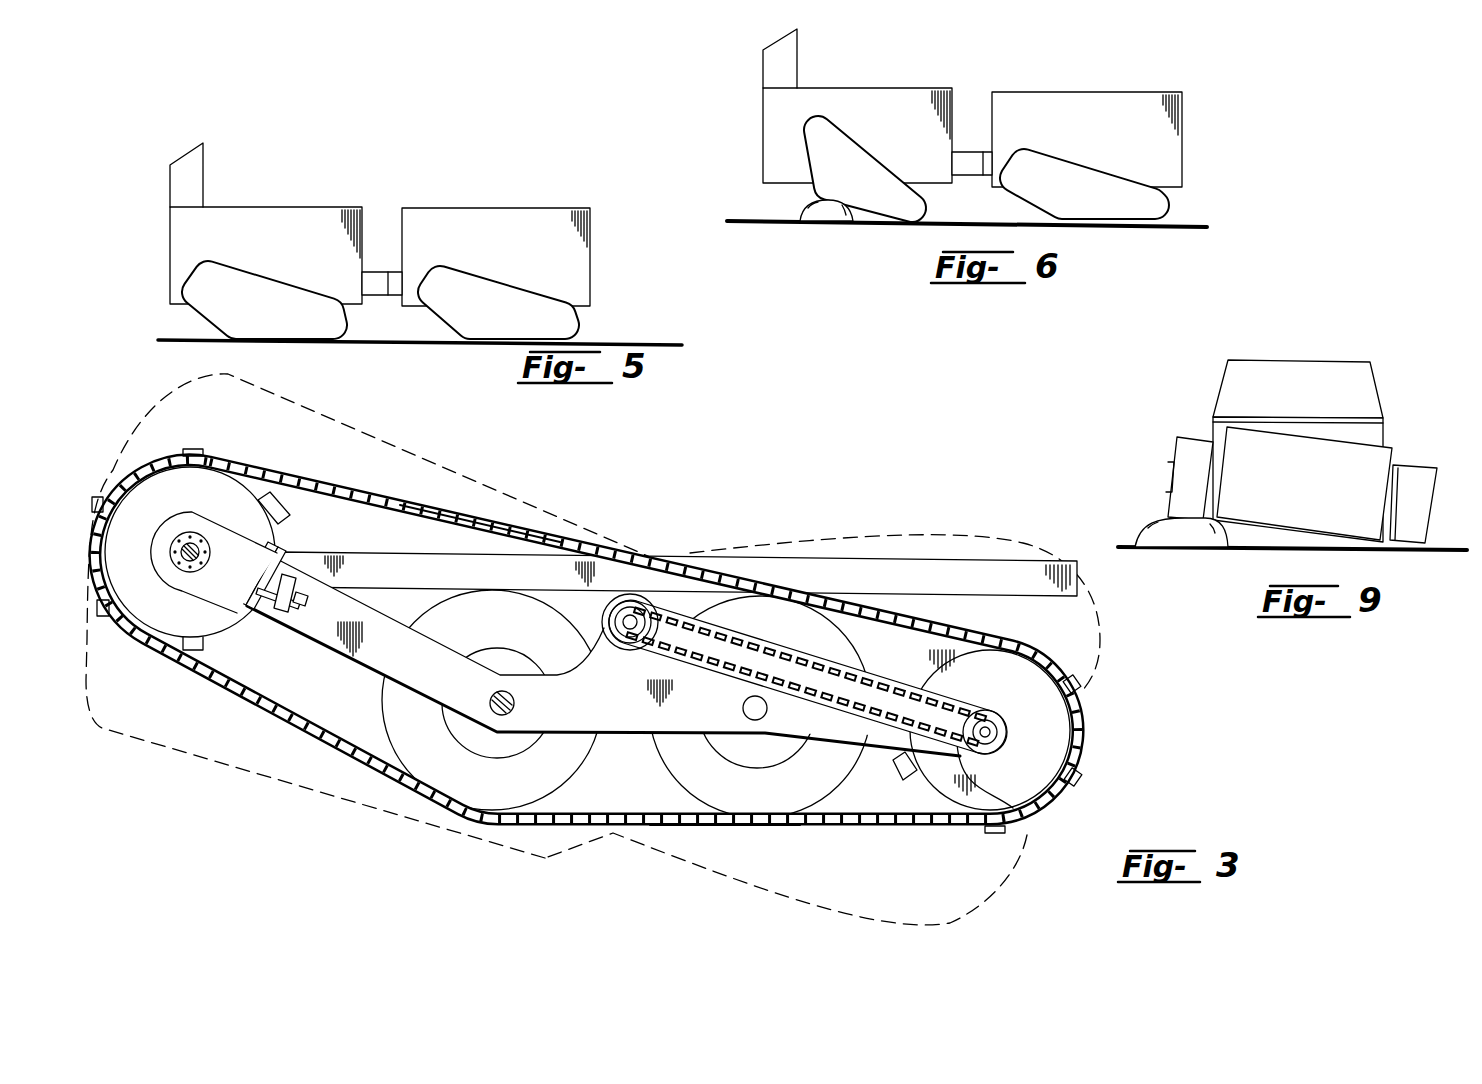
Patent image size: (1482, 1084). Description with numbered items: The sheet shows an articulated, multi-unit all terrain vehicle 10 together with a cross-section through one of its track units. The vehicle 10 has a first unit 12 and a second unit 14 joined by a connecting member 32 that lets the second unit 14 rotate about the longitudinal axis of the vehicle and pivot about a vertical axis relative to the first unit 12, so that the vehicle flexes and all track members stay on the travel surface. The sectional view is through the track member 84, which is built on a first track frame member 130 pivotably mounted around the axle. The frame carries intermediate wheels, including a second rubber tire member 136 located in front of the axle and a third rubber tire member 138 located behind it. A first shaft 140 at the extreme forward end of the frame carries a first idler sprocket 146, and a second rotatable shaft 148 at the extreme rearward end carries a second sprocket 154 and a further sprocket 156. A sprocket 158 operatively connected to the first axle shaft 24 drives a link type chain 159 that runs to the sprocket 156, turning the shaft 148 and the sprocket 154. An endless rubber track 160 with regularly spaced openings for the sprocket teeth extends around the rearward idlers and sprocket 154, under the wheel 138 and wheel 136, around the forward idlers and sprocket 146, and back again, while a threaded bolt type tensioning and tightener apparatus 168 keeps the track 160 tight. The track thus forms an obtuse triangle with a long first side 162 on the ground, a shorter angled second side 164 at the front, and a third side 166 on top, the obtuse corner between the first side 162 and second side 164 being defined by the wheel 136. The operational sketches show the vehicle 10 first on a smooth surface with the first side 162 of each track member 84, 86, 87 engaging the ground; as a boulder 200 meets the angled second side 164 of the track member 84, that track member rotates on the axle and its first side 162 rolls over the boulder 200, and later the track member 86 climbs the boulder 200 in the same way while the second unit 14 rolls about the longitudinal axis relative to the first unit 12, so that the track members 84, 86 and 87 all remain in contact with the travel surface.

In FIG. 5, the all terrain vehicle 10 is at (548, 207).
In FIG. 6, the all terrain vehicle 10 is at (1180, 90).
In FIG. 9, the all terrain vehicle 10 is at (1385, 392).
In FIG. 5, the first unit 12 is at (285, 207).
In FIG. 6, the first unit 12 is at (865, 92).
In FIG. 9, the first unit 12 is at (1313, 360).
In FIG. 5, the second unit 14 is at (448, 208).
In FIG. 6, the second unit 14 is at (1075, 92).
In FIG. 9, the second unit 14 is at (1273, 525).
In FIG. 3, the first axle shaft 24 is at (630, 618).
In FIG. 5, the connecting member 32 is at (368, 272).
In FIG. 6, the connecting member 32 is at (965, 175).
In FIG. 5, the track member 84 is at (197, 310).
In FIG. 6, the track member 84 is at (863, 152).
In FIG. 5, the track member 86 is at (573, 330).
In FIG. 6, the track member 86 is at (1170, 200).
In FIG. 9, the track member 86 is at (1175, 458).
In FIG. 9, the track member 87 is at (1433, 470).
In FIG. 3, the first track frame member 130 is at (620, 717).
In FIG. 3, the second rubber tire member 136 is at (473, 795).
In FIG. 3, the third rubber tire member 138 is at (780, 780).
In FIG. 3, the first shaft 140 is at (178, 545).
In FIG. 3, the first idler sprocket 146 is at (158, 592).
In FIG. 3, the second rotatable shaft 148 is at (990, 733).
In FIG. 3, the second sprocket 154 is at (1003, 787).
In FIG. 3, the further sprocket 156 is at (1007, 778).
In FIG. 3, the sprocket 158 is at (650, 647).
In FIG. 3, the link type chain 159 is at (807, 657).
In FIG. 3, the track 160 is at (483, 523).
In FIG. 3, the first side 162 is at (735, 812).
In FIG. 3, the second side 164 is at (280, 723).
In FIG. 3, the third side 166 is at (540, 533).
In FIG. 3, the tensioning and tightener apparatus 168 is at (266, 614).
In FIG. 6, the boulder 200 is at (828, 214).
In FIG. 9, the boulder 200 is at (1193, 533).